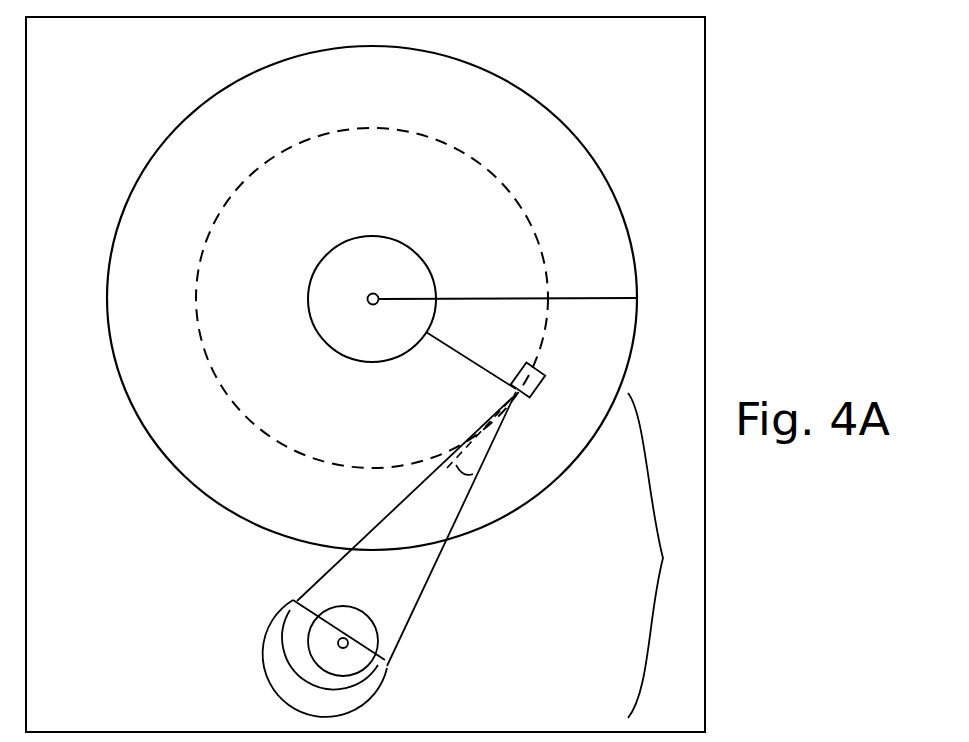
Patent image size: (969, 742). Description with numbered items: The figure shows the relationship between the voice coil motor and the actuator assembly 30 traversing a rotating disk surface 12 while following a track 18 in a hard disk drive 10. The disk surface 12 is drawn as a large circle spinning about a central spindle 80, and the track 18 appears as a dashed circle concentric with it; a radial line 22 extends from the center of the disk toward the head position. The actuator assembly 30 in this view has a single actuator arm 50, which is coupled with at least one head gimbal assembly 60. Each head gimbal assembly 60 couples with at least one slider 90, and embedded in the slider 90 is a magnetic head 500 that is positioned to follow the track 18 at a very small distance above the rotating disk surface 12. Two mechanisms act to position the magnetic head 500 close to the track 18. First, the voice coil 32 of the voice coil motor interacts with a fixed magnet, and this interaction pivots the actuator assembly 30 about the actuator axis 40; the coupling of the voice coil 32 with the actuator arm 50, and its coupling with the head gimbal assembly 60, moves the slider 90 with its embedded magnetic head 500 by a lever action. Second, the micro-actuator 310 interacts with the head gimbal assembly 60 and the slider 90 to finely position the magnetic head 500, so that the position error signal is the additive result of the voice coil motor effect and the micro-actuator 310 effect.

The hard disk drive 10 is at (247, 63).
The rotating disk surface 12 is at (108, 261).
The track 18 is at (518, 210).
The radial line 22 is at (470, 358).
The actuator assembly 30 is at (662, 555).
The voice coil 32 is at (262, 650).
The actuator axis 40 is at (341, 649).
The actuator arm 50 is at (452, 523).
The head gimbal assembly 60 is at (490, 441).
The spindle 80 is at (394, 287).
The slider 90 is at (538, 386).
The magnetic head 500 is at (565, 355).
The micro-actuator 310 is at (565, 355).